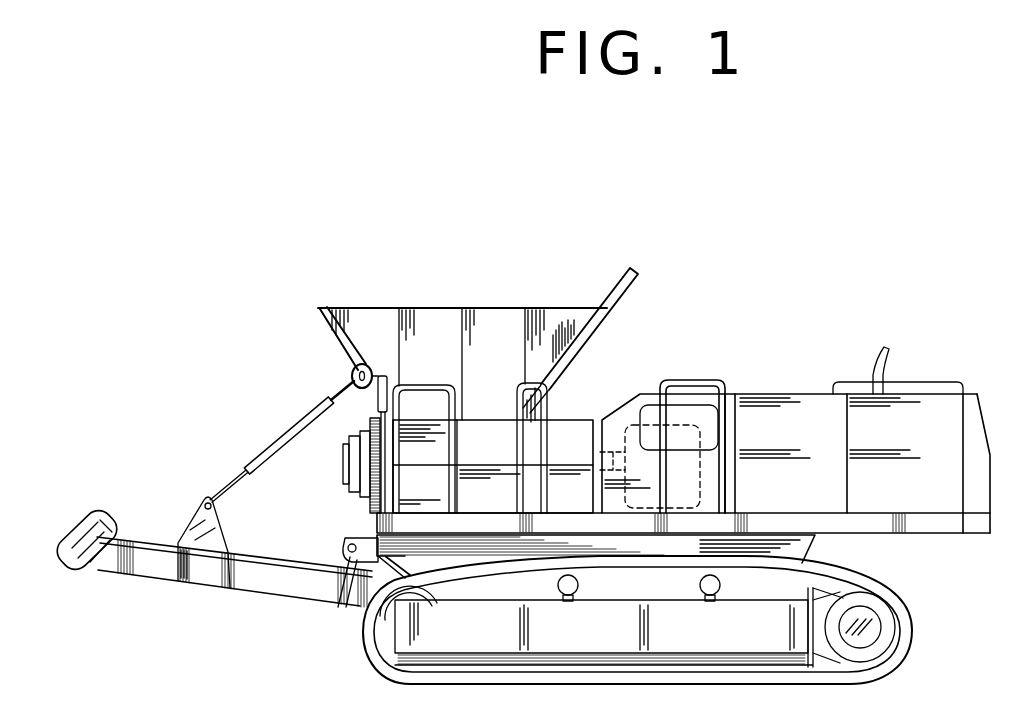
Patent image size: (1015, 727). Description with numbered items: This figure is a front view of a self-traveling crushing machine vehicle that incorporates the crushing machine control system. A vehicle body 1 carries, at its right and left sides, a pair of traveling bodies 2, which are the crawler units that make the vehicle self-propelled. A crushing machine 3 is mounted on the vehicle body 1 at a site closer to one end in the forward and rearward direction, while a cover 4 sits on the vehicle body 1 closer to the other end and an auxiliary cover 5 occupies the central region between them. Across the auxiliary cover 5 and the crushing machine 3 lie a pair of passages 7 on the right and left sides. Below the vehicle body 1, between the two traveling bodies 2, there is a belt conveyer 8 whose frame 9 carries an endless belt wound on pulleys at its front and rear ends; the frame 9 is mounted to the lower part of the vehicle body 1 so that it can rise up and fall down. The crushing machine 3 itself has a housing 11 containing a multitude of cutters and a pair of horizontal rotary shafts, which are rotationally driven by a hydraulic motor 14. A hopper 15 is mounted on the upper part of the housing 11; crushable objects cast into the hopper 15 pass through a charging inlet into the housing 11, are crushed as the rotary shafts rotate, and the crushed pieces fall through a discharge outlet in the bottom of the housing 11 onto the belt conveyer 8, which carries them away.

The vehicle body 1 is at (812, 545).
The traveling bodies 2 is at (907, 600).
The crushing machine 3 is at (410, 490).
The cover 4 is at (940, 410).
The auxiliary cover 5 is at (645, 394).
The passages 7 is at (565, 514).
The belt conveyer 8 is at (289, 601).
The frame 9 is at (233, 586).
The housing 11 is at (487, 425).
The hydraulic motor 14 is at (696, 435).
The hopper 15 is at (561, 312).